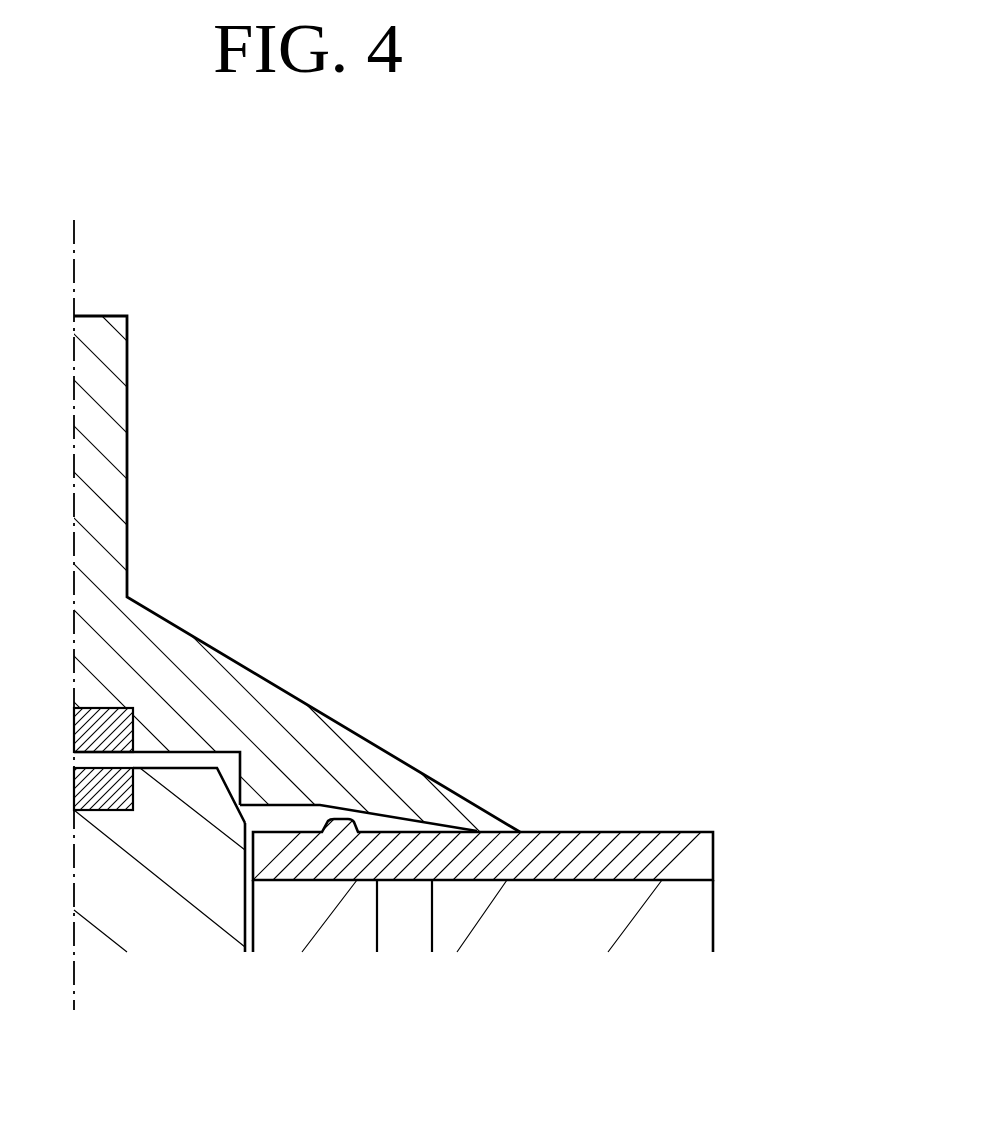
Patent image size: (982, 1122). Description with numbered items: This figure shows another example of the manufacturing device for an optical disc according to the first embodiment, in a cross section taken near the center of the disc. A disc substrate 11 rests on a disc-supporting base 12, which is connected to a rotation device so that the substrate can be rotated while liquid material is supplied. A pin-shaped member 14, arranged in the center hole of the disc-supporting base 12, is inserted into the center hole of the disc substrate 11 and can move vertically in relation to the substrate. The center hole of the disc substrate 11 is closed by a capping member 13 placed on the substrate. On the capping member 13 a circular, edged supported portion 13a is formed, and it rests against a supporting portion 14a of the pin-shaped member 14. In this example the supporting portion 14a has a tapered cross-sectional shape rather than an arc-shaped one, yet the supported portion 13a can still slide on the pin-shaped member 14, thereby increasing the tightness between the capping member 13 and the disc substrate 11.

The disc substrate 11 is at (703, 858).
The disc-supporting base 12 is at (690, 917).
The capping member 13 is at (158, 527).
The supported portion 13a is at (248, 800).
The pin-shaped member 14 is at (160, 974).
The supporting portion 14a is at (241, 762).